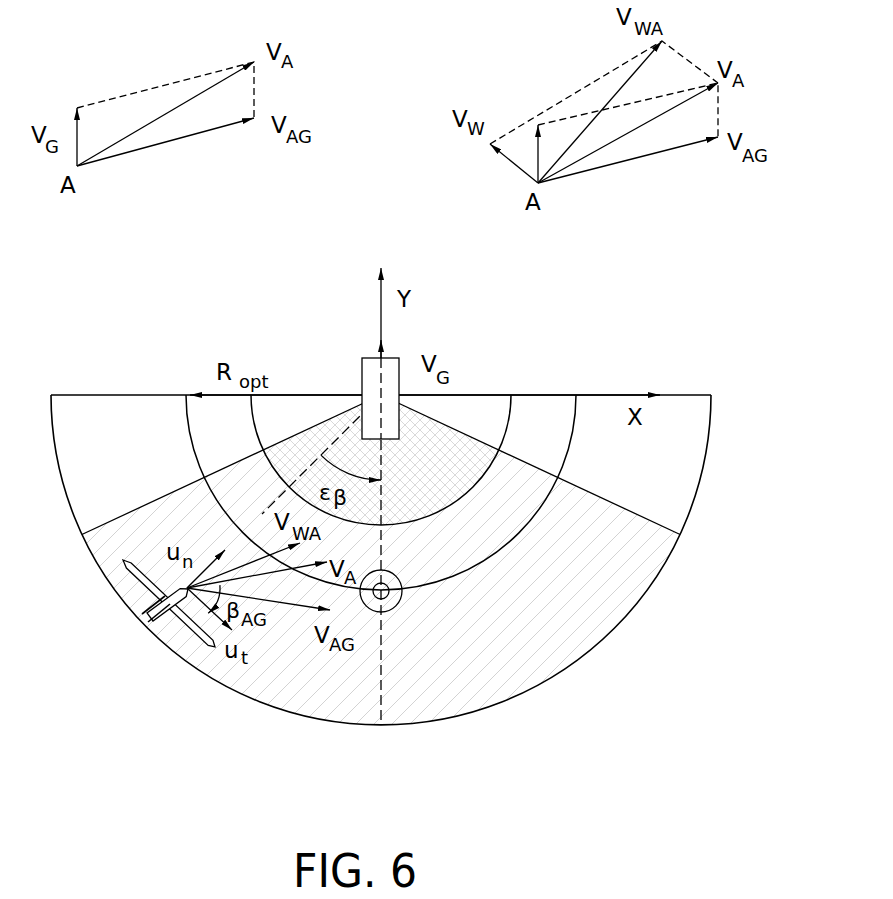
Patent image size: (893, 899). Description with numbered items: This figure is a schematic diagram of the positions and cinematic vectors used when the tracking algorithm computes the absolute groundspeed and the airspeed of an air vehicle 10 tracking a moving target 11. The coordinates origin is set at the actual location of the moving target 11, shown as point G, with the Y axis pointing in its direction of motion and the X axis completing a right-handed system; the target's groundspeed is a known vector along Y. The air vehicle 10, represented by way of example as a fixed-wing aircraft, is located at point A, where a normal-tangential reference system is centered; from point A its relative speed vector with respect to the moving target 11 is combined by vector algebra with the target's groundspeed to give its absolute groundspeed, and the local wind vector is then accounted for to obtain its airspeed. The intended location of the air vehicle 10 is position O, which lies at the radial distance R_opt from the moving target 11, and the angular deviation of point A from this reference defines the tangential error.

The air vehicle 10 is at (173, 615).
The moving target 11 is at (397, 363).
The air vehicle location point A is at (227, 599).
The moving target location point G is at (360, 383).
The intended air vehicle location O is at (391, 600).